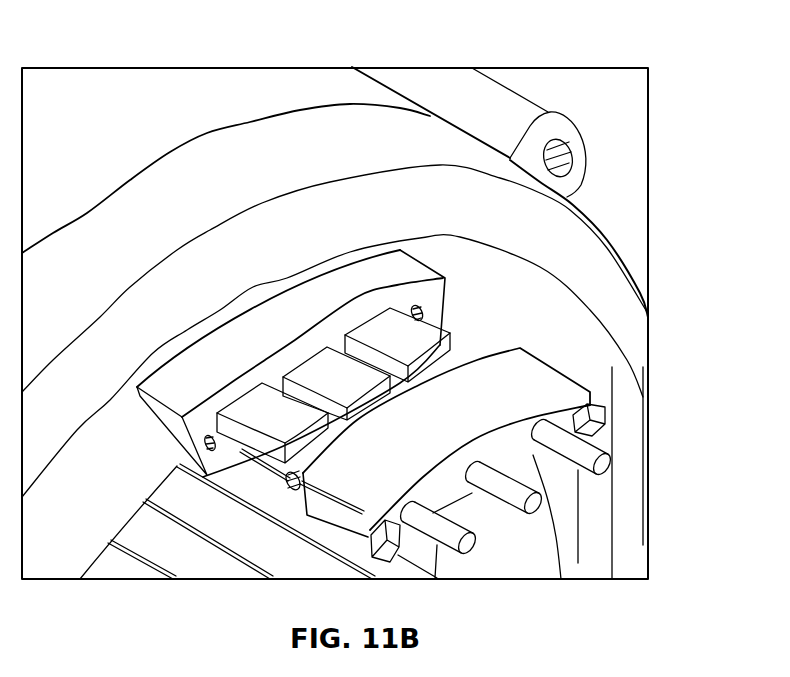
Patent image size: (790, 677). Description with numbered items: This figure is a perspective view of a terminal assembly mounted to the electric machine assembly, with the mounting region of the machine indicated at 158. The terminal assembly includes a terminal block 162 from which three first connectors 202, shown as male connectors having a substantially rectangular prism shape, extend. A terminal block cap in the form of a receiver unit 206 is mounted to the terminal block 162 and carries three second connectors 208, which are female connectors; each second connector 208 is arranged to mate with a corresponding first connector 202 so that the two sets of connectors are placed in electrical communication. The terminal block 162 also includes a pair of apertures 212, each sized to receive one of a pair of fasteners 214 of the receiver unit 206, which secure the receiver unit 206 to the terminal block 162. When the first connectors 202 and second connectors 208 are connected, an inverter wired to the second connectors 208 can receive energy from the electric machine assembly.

The ring / rotor body 158 is at (578, 243).
The terminal block 162 is at (405, 253).
The first connectors 202 is at (363, 332).
The receiver unit 206 is at (519, 348).
The second connectors 208 is at (600, 455).
The apertures 212 is at (205, 443).
The fasteners 214 is at (603, 408).